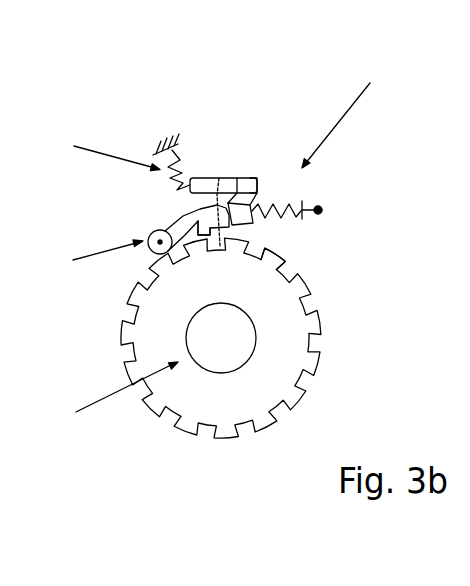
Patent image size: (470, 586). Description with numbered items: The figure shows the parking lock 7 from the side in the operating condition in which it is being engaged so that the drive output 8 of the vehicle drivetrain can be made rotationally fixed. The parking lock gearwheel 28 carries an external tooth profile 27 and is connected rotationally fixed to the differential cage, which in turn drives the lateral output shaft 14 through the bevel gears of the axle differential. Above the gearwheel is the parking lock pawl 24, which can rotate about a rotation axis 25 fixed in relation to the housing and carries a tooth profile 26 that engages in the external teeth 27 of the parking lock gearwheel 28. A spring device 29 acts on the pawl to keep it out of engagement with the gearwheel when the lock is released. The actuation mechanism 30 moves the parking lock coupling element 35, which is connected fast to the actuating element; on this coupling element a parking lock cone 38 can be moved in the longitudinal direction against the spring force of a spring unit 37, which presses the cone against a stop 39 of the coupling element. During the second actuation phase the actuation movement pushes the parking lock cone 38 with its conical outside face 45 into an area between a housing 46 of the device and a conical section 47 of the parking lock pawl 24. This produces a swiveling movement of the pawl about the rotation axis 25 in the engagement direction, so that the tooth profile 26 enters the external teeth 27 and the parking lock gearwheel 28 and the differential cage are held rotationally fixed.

The parking lock 7 is at (101, 260).
The drive output 8 is at (118, 397).
The lateral output shaft 14 is at (222, 338).
The parking lock pawl 24 is at (166, 222).
The rotation axis 25 is at (150, 250).
The tooth profile 26 is at (222, 235).
The external tooth profile 27 is at (283, 275).
The parking lock gearwheel 28 is at (162, 350).
The spring device 29 is at (102, 149).
The actuation mechanism 30 is at (341, 105).
The parking lock coupling element 35 is at (313, 204).
The spring unit 37 is at (298, 204).
The parking lock cone 38 is at (238, 177).
The stop 39 is at (220, 177).
The conical outside face 45 is at (256, 245).
The housing 46 is at (256, 177).
The conical section 47 is at (216, 193).